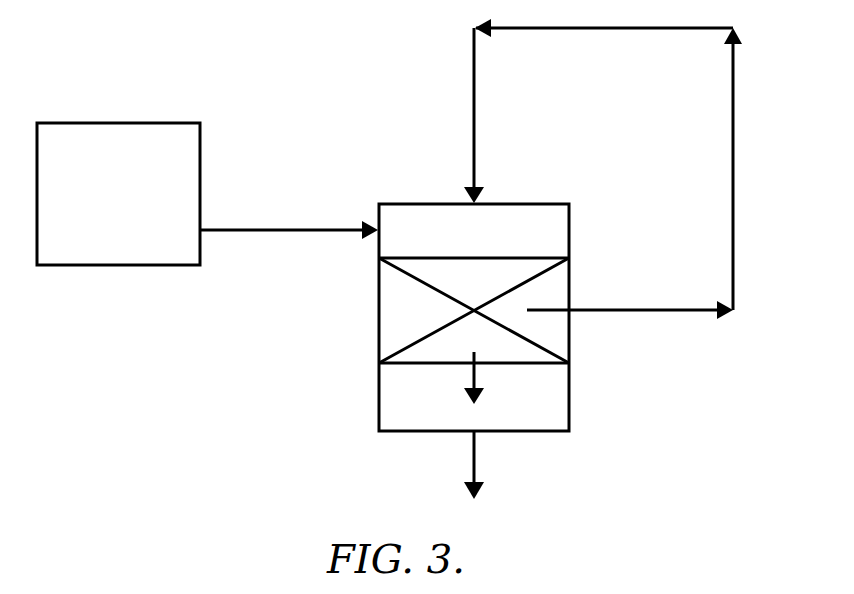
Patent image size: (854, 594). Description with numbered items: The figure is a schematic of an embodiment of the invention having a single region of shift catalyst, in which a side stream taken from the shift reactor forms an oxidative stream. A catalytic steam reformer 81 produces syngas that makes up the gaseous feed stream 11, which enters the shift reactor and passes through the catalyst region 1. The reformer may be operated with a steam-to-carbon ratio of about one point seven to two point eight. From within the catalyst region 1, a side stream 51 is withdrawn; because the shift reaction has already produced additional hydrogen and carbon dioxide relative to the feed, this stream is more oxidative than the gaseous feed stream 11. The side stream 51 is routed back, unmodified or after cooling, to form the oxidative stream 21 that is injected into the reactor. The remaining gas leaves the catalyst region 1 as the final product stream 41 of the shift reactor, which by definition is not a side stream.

The catalytic steam reformer 81 is at (97, 218).
The gaseous feed stream 11 is at (255, 233).
The catalyst region 1 is at (569, 283).
The oxidative stream 21 is at (474, 120).
The side stream 51 is at (690, 314).
The final product stream 41 is at (475, 455).